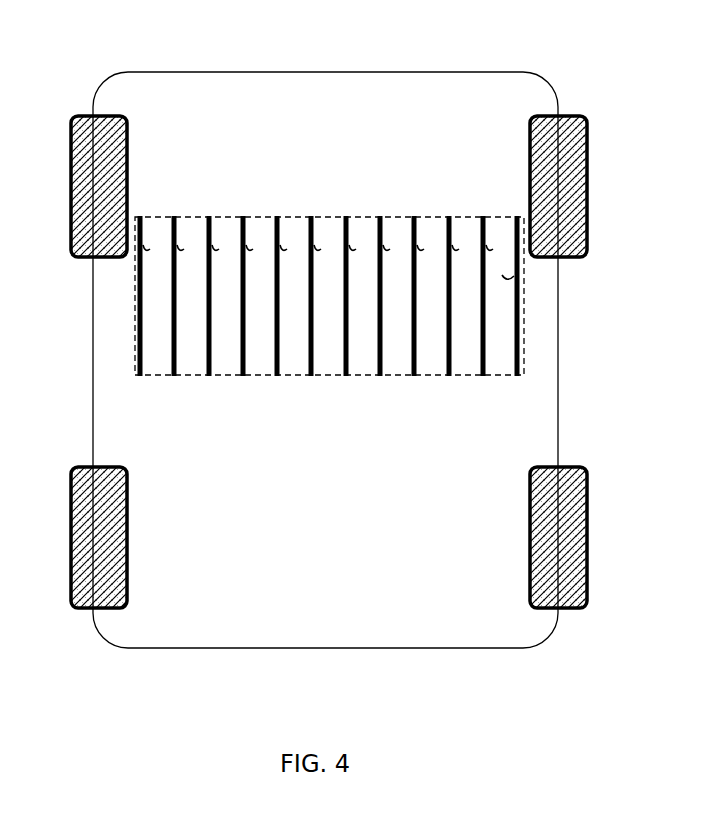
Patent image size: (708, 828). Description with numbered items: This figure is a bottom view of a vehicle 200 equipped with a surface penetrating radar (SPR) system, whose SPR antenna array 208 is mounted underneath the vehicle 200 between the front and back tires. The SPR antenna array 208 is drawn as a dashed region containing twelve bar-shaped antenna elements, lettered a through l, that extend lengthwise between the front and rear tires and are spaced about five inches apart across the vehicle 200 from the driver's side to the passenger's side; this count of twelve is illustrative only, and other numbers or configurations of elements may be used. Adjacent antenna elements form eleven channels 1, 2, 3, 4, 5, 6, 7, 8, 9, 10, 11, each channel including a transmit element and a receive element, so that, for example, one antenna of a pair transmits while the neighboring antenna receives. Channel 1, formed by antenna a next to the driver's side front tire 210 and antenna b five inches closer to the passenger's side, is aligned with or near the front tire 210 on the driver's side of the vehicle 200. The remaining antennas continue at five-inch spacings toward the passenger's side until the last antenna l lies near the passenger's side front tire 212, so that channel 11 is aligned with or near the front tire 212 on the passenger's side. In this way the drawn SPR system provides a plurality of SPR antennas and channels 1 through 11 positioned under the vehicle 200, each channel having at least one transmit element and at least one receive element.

The vehicle 200 is at (208, 72).
The SPR antenna array 208 is at (278, 310).
The front tire on the driver's side 210 is at (70, 216).
The front tire on the passenger's side 212 is at (588, 204).
The channel 1 is at (162, 357).
The channel 2 is at (196, 357).
The channel 3 is at (230, 357).
The channel 4 is at (264, 357).
The channel 5 is at (298, 357).
The channel 6 is at (332, 357).
The channel 7 is at (366, 357).
The channel 8 is at (400, 357).
The channel 9 is at (434, 357).
The channel 10 is at (469, 357).
The channel 11 is at (503, 357).